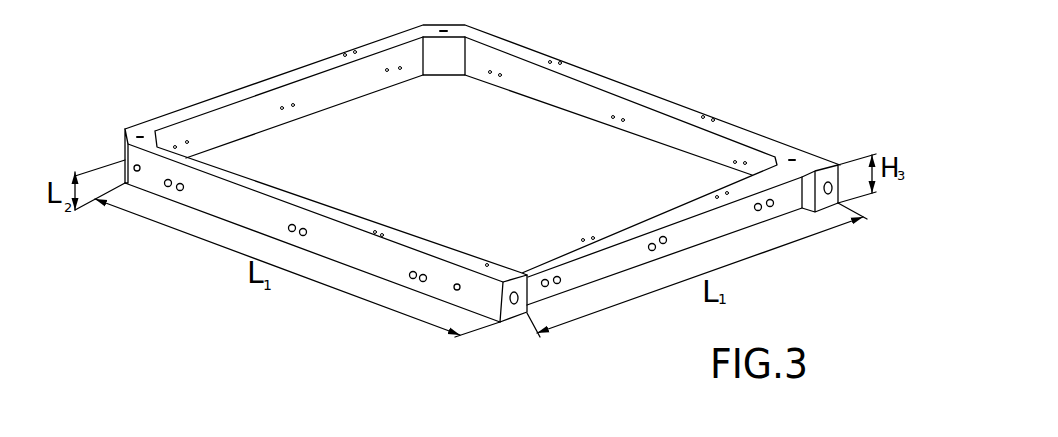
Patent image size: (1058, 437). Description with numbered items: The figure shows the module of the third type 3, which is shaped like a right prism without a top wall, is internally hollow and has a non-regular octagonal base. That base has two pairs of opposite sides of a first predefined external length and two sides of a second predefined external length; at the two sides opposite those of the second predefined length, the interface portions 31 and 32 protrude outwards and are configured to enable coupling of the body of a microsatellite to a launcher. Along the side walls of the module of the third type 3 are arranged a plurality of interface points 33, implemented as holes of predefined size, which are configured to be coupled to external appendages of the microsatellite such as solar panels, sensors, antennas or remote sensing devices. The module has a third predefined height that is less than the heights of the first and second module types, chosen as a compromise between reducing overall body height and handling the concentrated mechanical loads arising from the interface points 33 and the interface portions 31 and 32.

The module of the third type 3 is at (706, 74).
The interface portion 31 is at (521, 310).
The interface portion 32 is at (831, 178).
The interface points 33 is at (183, 185).